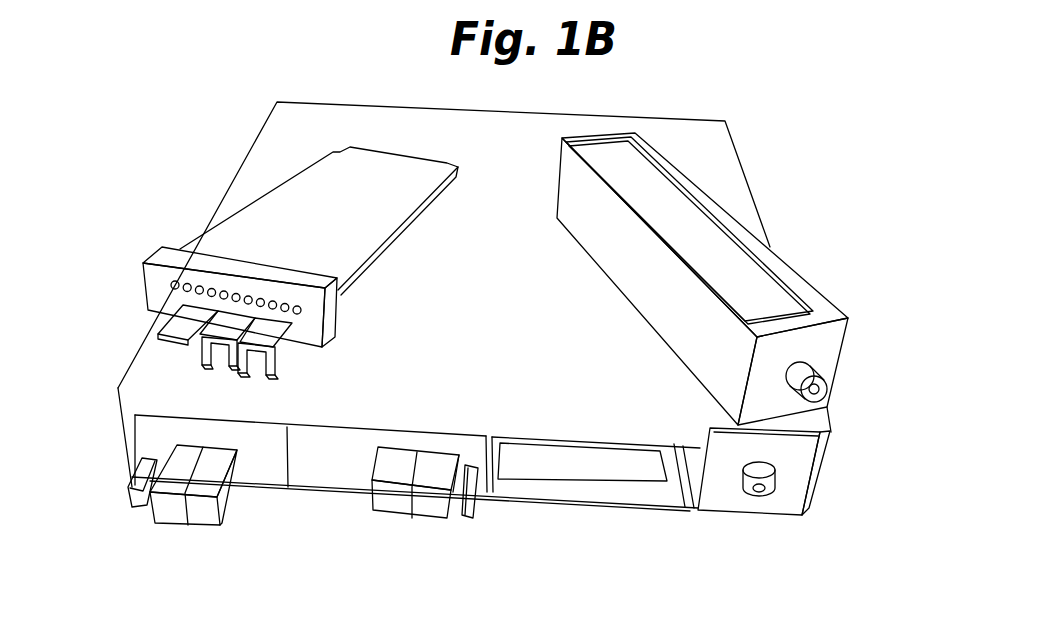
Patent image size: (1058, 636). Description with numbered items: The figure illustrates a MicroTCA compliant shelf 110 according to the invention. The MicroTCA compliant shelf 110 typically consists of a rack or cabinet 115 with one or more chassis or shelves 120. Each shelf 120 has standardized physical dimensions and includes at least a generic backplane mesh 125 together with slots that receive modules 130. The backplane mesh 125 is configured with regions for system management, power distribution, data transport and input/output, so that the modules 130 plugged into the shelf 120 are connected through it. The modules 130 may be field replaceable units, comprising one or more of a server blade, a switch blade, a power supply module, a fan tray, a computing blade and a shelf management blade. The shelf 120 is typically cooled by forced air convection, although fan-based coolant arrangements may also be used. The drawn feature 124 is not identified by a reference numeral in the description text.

The MicroTCA compliant shelf 110 is at (790, 160).
The rack 115 is at (132, 363).
The shelf 120 is at (615, 503).
The slot 124 is at (630, 445).
The backplane mesh 125 is at (515, 157).
The module 130 is at (148, 428).